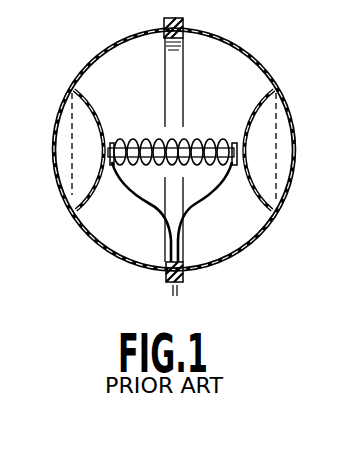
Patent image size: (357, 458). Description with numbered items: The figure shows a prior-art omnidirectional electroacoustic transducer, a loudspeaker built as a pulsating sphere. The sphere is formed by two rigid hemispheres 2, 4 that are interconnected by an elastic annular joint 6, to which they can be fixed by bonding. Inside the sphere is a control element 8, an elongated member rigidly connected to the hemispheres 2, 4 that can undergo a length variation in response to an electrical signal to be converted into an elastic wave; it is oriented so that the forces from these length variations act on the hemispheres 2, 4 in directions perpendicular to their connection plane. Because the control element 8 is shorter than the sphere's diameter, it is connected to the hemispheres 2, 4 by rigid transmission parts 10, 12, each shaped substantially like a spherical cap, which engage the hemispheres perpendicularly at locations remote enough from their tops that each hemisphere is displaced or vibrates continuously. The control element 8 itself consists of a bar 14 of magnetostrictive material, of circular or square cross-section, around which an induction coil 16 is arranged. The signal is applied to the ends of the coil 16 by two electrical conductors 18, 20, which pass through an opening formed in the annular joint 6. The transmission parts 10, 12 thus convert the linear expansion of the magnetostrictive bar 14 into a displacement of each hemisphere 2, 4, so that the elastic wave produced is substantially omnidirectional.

The rigid hemisphere 2 is at (92, 59).
The rigid hemisphere 4 is at (269, 48).
The elastic annular joint 6 is at (164, 19).
The control element 8 is at (137, 113).
The rigid transmission part 10 is at (97, 192).
The rigid transmission part 12 is at (268, 192).
The bar 14 is at (236, 142).
The induction coil 16 is at (210, 161).
The electrical conductor 18 is at (153, 207).
The electrical conductor 20 is at (188, 215).